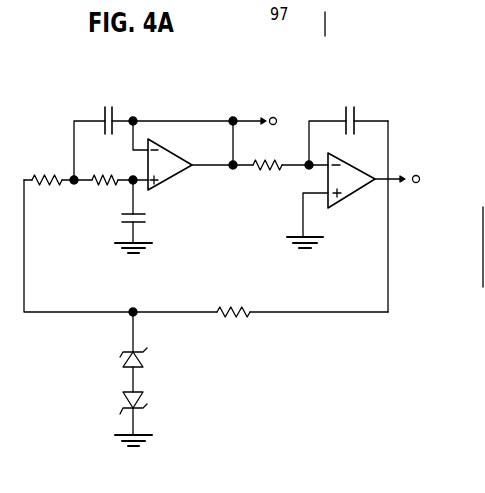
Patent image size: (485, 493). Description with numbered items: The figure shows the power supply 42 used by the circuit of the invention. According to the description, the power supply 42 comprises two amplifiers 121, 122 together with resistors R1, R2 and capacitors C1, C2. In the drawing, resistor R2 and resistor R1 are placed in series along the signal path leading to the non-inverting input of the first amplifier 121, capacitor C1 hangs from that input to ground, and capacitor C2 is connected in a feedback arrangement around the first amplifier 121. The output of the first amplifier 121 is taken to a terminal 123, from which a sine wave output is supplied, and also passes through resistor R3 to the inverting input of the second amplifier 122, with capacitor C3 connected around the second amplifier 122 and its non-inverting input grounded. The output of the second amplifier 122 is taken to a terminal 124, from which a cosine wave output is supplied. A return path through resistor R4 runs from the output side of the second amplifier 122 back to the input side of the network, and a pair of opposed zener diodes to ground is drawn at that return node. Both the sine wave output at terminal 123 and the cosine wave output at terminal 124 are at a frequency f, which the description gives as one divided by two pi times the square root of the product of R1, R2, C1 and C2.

The power supply 42 is at (424, 156).
The amplifier 121 is at (163, 187).
The amplifier 122 is at (347, 198).
The terminal 123 is at (277, 117).
The terminal 124 is at (416, 185).
The resistor R1 is at (105, 164).
The resistor R2 is at (47, 164).
The resistor R3 is at (267, 152).
The resistor R4 is at (233, 294).
The capacitor C1 is at (126, 216).
The capacitor C2 is at (107, 104).
The capacitor C3 is at (348, 106).